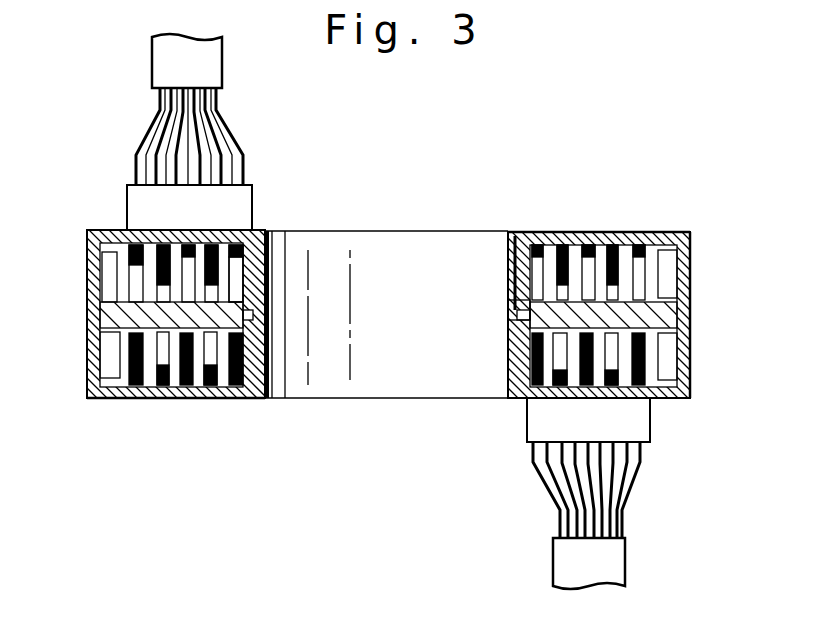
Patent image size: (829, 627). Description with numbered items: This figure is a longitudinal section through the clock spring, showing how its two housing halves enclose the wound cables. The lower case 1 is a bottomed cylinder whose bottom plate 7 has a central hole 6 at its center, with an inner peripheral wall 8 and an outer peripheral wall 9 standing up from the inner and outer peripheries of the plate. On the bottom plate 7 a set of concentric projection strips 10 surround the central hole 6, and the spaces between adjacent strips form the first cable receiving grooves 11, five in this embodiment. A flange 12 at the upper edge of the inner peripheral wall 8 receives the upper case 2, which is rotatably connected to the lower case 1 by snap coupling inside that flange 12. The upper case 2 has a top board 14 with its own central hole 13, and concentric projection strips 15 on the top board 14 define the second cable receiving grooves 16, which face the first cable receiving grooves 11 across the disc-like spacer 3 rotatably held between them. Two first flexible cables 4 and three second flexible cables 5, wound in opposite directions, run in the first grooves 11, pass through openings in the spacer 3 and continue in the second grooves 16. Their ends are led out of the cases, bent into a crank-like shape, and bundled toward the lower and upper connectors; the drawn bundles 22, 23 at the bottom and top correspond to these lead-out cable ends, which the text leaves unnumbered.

The lower case 1 is at (697, 400).
The upper case 2 is at (661, 232).
The spacer 3 is at (110, 314).
The first flexible cable 4 is at (155, 232).
The second flexible cable 5 is at (132, 245).
The central hole 6 is at (278, 400).
The bottom plate 7 is at (194, 400).
The inner peripheral wall 8 is at (297, 232).
The outer peripheral wall 9 is at (90, 352).
The projection strip 10 is at (108, 358).
The first cable receiving groove 11 is at (650, 342).
The flange 12 is at (516, 300).
The central hole 13 is at (509, 300).
The top board 14 is at (570, 238).
The projection strip 15 is at (677, 286).
The second cable receiving groove 16 is at (222, 240).
The cable 22 is at (535, 418).
The cable 23 is at (190, 205).